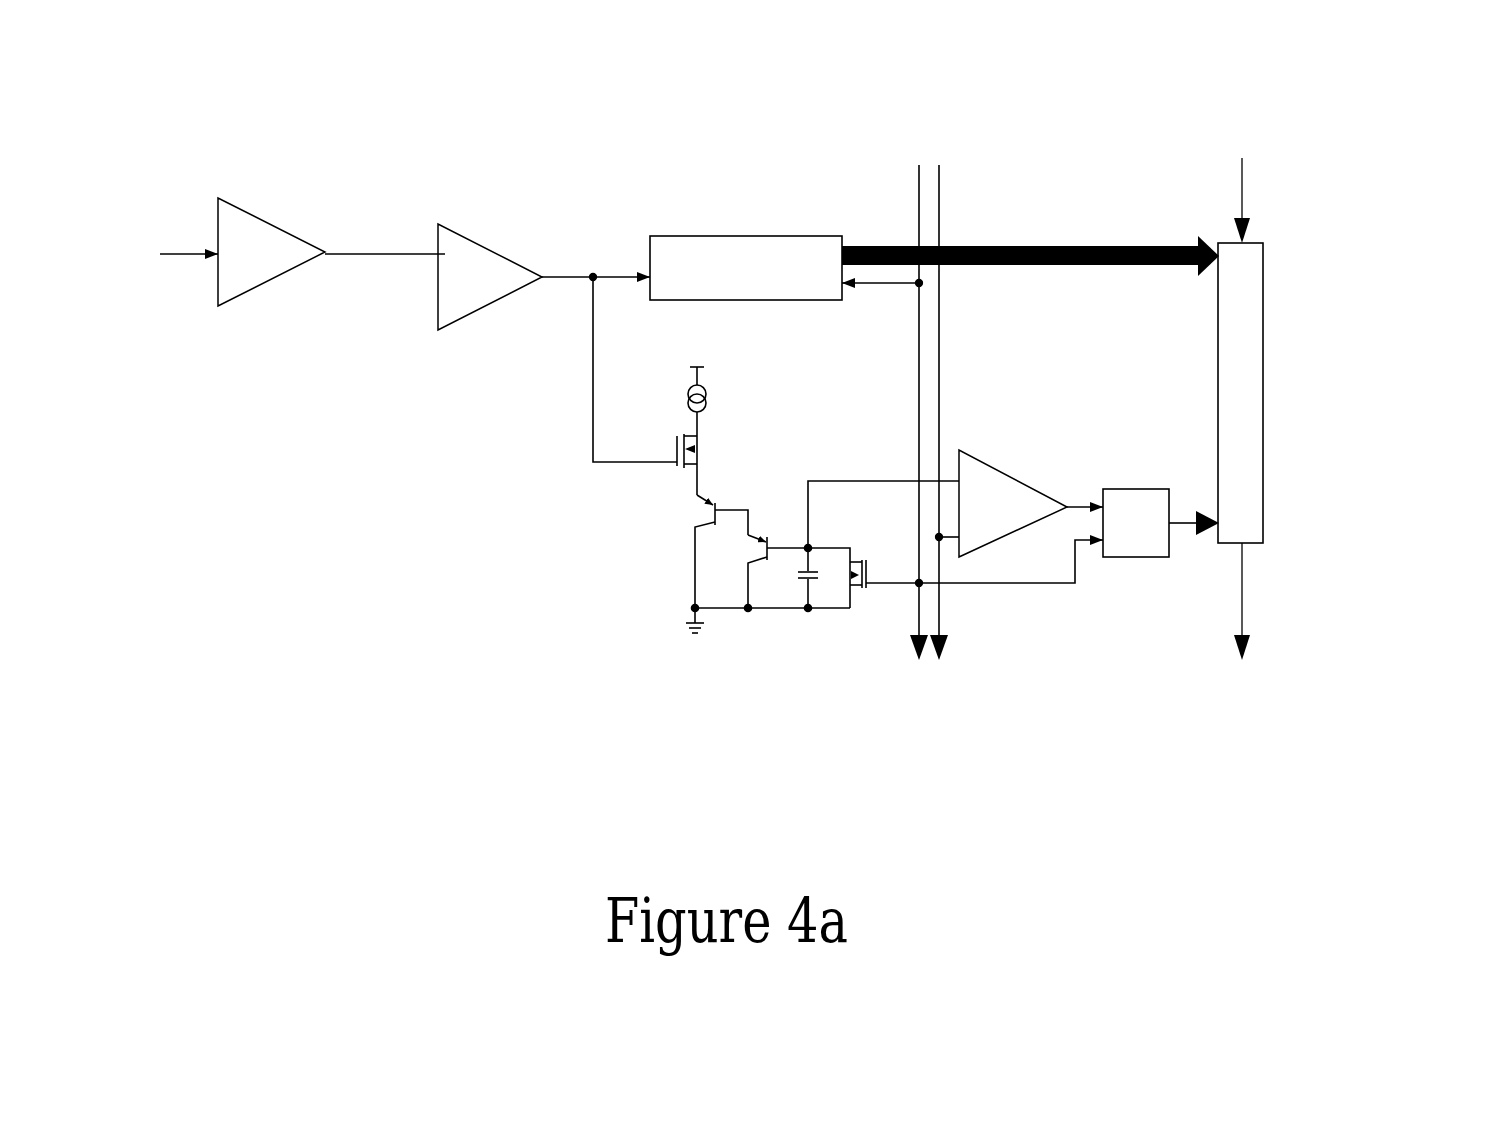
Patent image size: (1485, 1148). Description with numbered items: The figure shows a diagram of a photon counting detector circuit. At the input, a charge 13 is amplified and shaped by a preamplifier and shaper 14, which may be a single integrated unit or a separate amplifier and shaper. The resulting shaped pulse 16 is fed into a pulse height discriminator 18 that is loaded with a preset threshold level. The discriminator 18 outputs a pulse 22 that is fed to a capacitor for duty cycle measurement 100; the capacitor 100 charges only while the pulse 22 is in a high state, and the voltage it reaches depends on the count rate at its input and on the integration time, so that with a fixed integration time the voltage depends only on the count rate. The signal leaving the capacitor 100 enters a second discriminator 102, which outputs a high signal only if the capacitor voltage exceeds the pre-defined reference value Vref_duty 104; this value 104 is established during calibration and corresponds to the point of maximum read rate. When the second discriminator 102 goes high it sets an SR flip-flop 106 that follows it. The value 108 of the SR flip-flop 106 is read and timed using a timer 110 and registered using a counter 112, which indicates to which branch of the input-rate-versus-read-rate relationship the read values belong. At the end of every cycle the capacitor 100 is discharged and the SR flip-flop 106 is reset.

The charge 13 is at (184, 234).
The preamplifier and shaper 14 is at (257, 222).
The shaped pulse 16 is at (360, 257).
The pulse height discriminator 18 is at (480, 290).
The pulse 22 is at (558, 275).
The capacitor for duty cycle measurement 100 is at (727, 623).
The second discriminator 102 is at (1002, 500).
The Vref_duty 104 is at (1033, 148).
The SR flip-flop 106 is at (1116, 557).
The value of SR flip-flop 108 is at (1198, 533).
The timer 110 is at (787, 257).
The counter 112 is at (1247, 488).